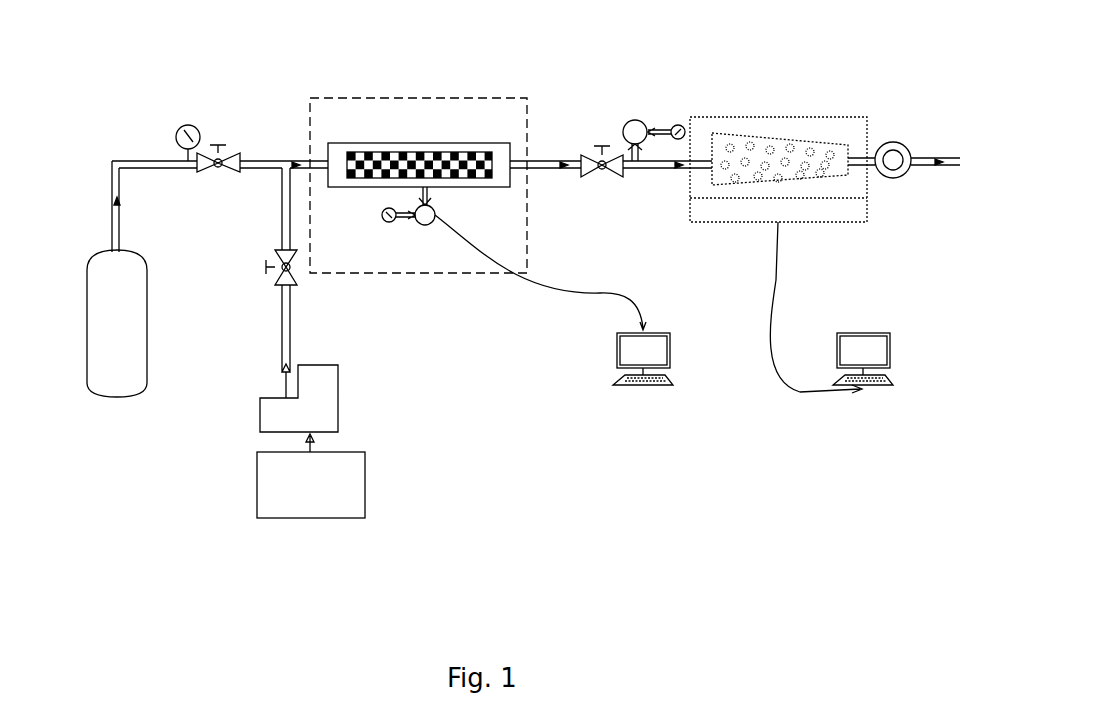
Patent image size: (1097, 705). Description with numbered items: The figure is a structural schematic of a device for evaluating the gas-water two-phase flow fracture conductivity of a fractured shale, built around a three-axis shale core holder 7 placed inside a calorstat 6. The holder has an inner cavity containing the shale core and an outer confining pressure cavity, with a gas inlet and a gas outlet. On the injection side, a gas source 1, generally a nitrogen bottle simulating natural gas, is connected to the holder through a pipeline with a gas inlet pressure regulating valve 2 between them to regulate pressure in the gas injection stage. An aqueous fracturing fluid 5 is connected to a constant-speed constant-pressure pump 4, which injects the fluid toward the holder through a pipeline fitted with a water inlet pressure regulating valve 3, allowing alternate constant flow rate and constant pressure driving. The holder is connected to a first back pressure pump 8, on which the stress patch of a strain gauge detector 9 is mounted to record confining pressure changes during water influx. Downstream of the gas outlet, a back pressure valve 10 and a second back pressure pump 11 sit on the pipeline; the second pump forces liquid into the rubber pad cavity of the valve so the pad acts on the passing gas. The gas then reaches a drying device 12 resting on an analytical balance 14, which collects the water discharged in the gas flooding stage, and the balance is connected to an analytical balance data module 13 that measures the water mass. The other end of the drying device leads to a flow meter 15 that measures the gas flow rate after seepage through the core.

The gas source 1 is at (115, 400).
The gas inlet pressure regulating valve 2 is at (220, 152).
The water inlet pressure regulating valve 3 is at (268, 280).
The constant-speed constant-pressure pump 4 is at (259, 400).
The aqueous fracturing fluid 5 is at (310, 520).
The calorstat 6 is at (420, 98).
The three-axis shale core holder 7 is at (420, 143).
The first back pressure pump 8 is at (411, 217).
The strain gauge detector 9 is at (640, 356).
The back pressure valve 10 is at (607, 172).
The second back pressure pump 11 is at (678, 125).
The drying device 12 is at (778, 136).
The analytical balance data module 13 is at (862, 334).
The analytical balance 14 is at (867, 210).
The flow meter 15 is at (893, 142).